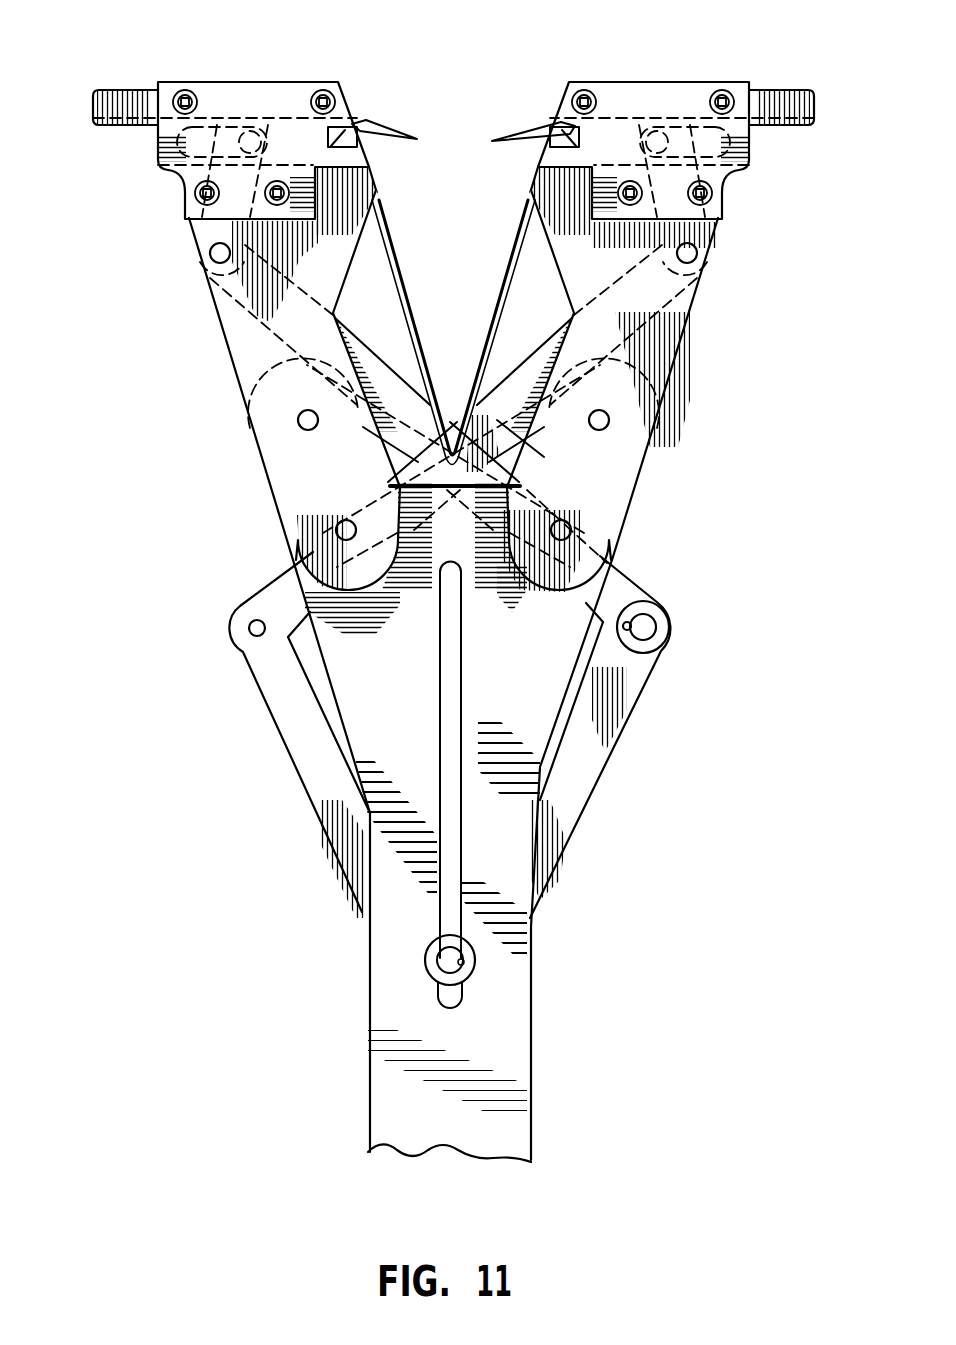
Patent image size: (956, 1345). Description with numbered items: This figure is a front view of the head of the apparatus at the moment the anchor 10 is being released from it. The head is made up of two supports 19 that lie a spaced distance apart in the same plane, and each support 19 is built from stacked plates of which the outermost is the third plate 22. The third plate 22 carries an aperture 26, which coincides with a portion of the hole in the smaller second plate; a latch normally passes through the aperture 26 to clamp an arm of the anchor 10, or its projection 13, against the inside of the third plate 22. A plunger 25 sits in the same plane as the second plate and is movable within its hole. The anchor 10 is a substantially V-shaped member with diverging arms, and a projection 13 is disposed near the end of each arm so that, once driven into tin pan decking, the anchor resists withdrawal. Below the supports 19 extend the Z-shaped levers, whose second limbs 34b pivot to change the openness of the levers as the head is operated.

The anchor 10 is at (493, 330).
The projection 13 is at (497, 135).
The support 19 is at (660, 360).
The third plate 22 is at (669, 117).
The plunger 25 is at (347, 127).
The aperture 26 is at (357, 127).
The second limb 34b is at (497, 420).